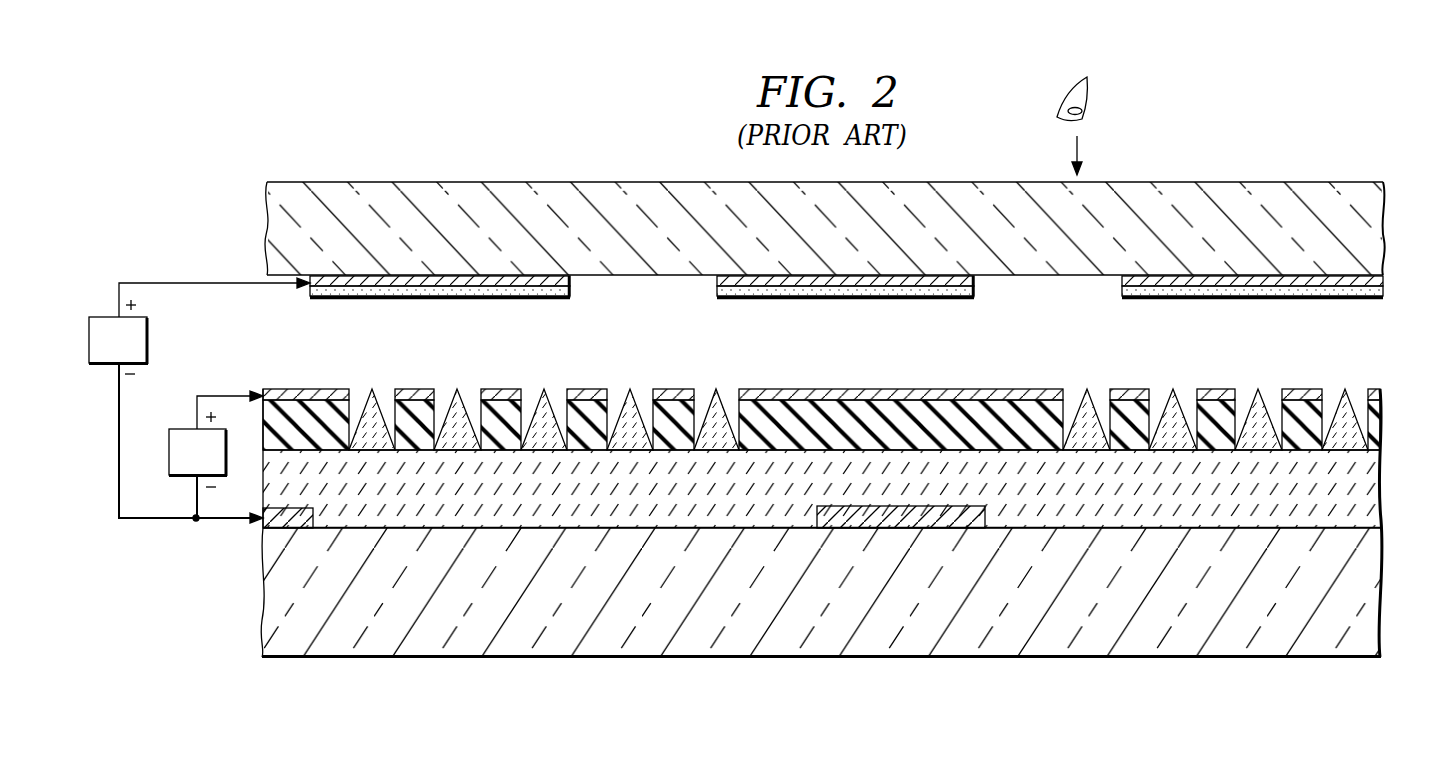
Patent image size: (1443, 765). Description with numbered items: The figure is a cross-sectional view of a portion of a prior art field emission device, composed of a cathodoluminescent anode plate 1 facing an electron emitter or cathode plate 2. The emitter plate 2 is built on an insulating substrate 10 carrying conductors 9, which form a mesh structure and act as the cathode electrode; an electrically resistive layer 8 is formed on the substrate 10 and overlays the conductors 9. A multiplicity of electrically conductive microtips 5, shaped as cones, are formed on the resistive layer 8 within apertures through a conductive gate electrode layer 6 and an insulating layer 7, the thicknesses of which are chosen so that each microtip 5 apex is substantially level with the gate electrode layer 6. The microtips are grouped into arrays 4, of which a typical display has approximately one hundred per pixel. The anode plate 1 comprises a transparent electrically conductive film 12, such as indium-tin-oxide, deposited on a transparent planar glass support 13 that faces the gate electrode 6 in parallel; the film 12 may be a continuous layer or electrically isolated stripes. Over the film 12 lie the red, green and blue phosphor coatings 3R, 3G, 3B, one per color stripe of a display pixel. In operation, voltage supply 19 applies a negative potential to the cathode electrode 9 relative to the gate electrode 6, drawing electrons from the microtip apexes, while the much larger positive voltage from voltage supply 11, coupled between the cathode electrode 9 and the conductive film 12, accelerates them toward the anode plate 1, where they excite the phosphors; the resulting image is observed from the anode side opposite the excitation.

The anode plate 1 is at (1406, 182).
The emitter plate 2 is at (1406, 380).
The red phosphor coating 3R is at (310, 288).
The green phosphor coating 3G is at (717, 290).
The blue phosphor coating 3B is at (1122, 292).
The arrays of microtips 4 is at (732, 368).
The microtips 5 is at (362, 410).
The gate electrode layer 6 is at (418, 392).
The insulating layer 7 is at (439, 411).
The electrically resistive layer 8 is at (264, 477).
The conductors 9 is at (900, 530).
The insulating substrate 10 is at (264, 575).
The voltage supply 11 is at (106, 316).
The transparent electrically conductive film 12 is at (975, 282).
The transparent planar support 13 is at (1222, 182).
The voltage supply 19 is at (184, 428).